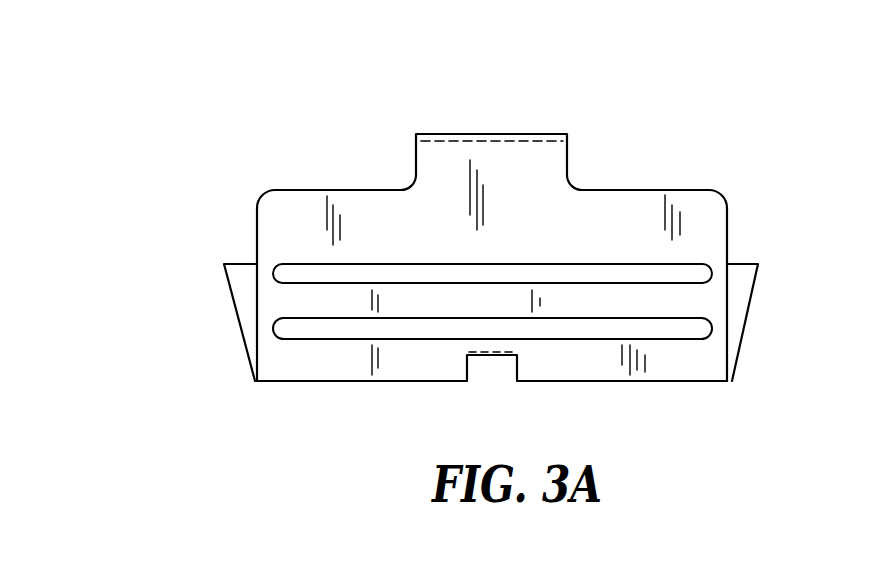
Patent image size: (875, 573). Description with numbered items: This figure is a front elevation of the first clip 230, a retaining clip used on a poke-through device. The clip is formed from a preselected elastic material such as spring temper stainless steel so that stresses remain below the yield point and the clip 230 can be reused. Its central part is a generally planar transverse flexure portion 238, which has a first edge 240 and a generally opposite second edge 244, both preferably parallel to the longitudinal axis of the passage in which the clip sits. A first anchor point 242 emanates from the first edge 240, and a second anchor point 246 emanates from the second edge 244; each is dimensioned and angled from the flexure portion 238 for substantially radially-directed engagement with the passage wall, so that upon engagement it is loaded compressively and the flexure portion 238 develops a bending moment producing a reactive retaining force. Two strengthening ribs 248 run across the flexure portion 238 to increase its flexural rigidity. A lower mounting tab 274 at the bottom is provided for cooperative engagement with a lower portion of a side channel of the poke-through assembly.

The first clip 230 is at (307, 402).
The transverse flexure portion 238 is at (618, 244).
The first edge 240 is at (730, 322).
The first anchor point 242 is at (752, 302).
The second edge 244 is at (255, 332).
The second anchor point 246 is at (233, 302).
The strengthening rib 248 is at (313, 262).
The lower mounting tab 274 is at (490, 360).